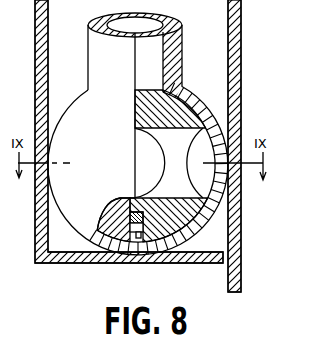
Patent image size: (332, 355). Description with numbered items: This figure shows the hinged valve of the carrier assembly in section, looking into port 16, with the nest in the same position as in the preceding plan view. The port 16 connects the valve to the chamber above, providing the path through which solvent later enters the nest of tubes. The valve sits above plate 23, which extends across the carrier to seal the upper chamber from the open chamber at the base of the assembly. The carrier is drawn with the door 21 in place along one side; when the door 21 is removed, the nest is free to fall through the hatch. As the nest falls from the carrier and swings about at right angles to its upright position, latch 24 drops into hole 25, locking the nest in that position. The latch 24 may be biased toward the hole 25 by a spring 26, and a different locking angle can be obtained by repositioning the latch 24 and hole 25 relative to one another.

The port 16 is at (162, 171).
The door 21 is at (237, 232).
The plate 23 is at (72, 263).
The latch 24 is at (138, 238).
The hole 25 is at (203, 159).
The spring 26 is at (130, 211).